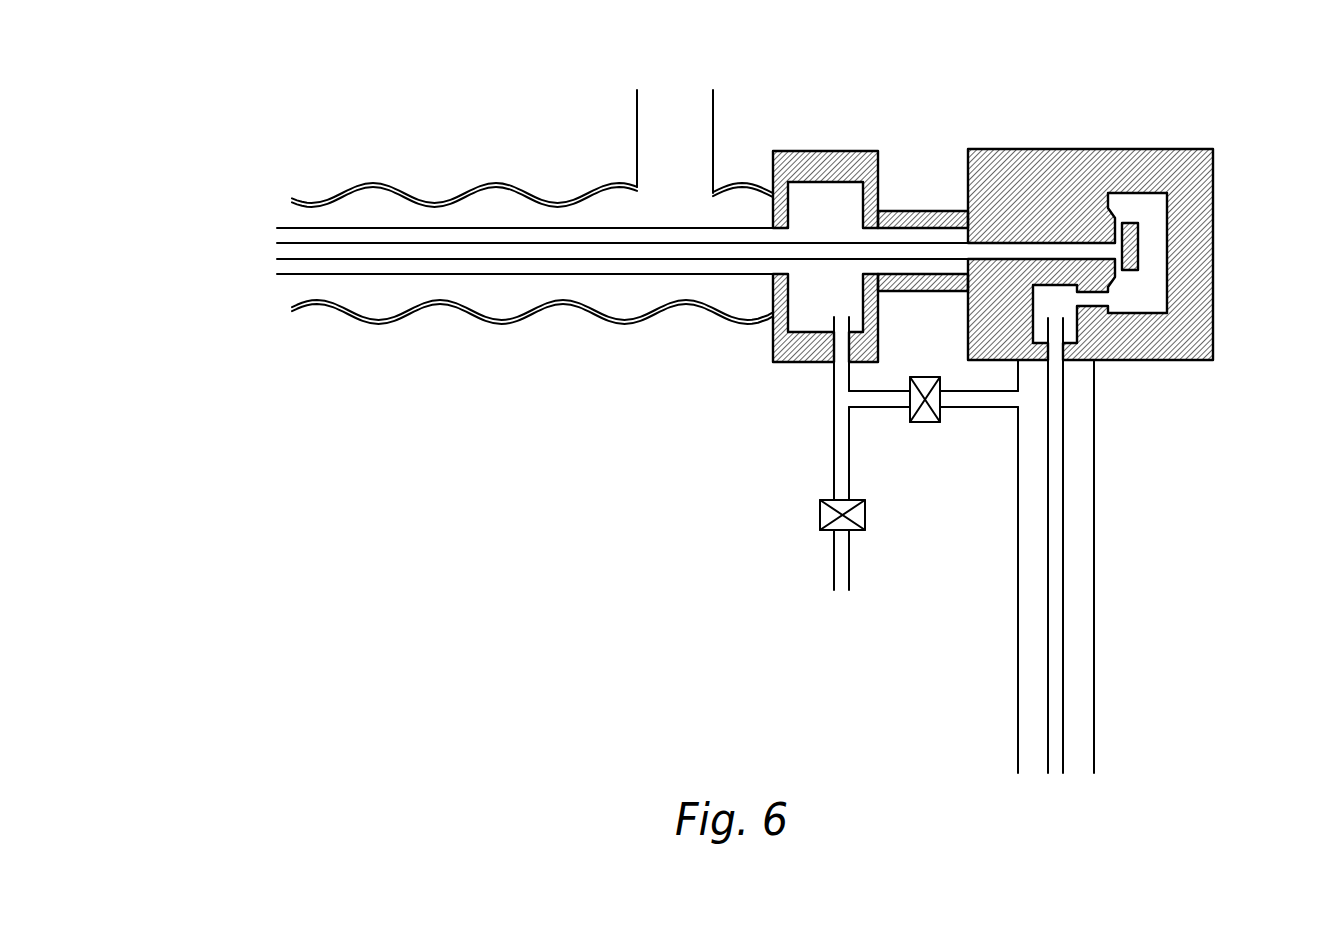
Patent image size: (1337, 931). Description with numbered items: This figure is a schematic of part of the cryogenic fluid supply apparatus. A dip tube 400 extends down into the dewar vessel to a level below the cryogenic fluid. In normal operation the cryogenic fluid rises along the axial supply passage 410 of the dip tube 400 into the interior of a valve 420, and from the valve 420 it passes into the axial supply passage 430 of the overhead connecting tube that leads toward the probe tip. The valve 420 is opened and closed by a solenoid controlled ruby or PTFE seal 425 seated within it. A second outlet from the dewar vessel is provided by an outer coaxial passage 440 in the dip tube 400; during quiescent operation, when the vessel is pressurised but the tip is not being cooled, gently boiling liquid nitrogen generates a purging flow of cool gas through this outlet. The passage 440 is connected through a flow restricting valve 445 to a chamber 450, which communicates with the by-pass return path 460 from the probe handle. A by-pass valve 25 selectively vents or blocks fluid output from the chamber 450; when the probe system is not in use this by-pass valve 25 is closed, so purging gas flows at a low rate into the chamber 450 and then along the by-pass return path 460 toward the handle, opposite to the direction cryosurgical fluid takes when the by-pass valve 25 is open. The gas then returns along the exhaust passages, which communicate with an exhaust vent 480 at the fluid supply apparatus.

The by-pass valve 25 is at (820, 513).
The dip tube 400 is at (1095, 505).
The axial supply passage 410 is at (1060, 587).
The valve 420 is at (1195, 347).
The solenoid controlled ruby or PTFE seal 425 is at (1133, 250).
The axial supply passage of the overhead connecting tube 430 is at (275, 250).
The outer coaxial passage 440 is at (1017, 540).
The flow restricting valve 445 is at (927, 422).
The chamber 450 is at (805, 307).
The by-pass return path 460 is at (280, 267).
The exhaust vent 480 is at (673, 110).